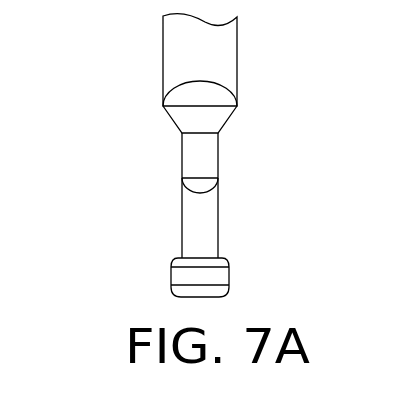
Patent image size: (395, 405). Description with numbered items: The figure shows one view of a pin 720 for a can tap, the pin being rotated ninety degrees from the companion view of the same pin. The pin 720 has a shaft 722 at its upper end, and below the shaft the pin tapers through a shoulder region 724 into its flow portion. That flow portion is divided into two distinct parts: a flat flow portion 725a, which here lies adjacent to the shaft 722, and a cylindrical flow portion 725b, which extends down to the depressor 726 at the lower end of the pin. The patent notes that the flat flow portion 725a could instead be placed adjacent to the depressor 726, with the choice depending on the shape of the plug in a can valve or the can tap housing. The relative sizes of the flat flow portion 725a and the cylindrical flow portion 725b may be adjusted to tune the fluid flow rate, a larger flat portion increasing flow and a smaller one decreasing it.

The pin 720 is at (118, 186).
The shaft 722 is at (237, 55).
The tapered shoulder 724 is at (225, 122).
The flat flow portion 725a is at (218, 158).
The cylindrical flow portion 725b is at (218, 220).
The depressor 726 is at (229, 275).